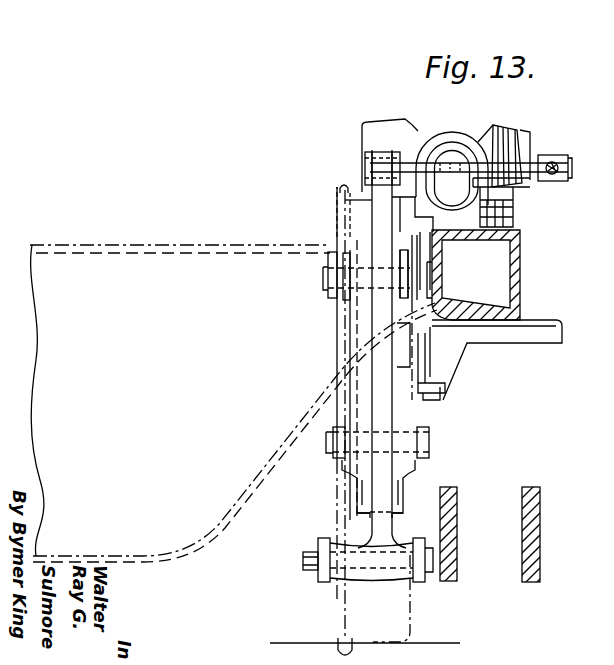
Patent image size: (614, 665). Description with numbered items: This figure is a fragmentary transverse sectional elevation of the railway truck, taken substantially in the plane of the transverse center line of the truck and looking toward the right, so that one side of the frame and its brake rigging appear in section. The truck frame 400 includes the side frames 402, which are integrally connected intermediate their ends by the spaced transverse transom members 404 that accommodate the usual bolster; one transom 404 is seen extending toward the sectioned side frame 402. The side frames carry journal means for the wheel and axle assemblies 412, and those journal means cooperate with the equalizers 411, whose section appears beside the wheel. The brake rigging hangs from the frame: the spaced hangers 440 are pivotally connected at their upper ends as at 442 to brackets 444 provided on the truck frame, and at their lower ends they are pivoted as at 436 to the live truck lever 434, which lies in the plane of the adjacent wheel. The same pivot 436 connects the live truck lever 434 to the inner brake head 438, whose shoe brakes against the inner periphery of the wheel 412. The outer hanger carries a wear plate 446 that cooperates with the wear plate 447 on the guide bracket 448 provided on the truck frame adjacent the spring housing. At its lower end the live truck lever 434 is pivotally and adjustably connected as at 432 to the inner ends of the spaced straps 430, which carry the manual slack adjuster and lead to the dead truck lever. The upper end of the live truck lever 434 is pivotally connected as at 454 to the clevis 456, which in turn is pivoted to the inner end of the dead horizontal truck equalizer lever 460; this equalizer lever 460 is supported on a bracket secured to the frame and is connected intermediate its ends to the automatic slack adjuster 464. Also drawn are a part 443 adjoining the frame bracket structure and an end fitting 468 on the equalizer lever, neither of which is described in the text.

The truck frame 400 is at (527, 241).
The side frames 402 is at (522, 270).
The transverse transom members 404 is at (150, 235).
The equalizers 411 is at (521, 534).
The wheel and axle assemblies 412 is at (392, 637).
The spaced straps 430 is at (421, 583).
The pivotal and adjustable connection 432 is at (315, 572).
The live truck lever 434 is at (377, 218).
The pivot 436 is at (333, 447).
The inner brake head 438 is at (407, 477).
The spaced hangers 440 is at (350, 340).
The pivot 442 is at (325, 280).
The bracket extension 443 is at (607, 370).
The brackets 444 is at (327, 257).
The wear plate 446 is at (417, 410).
The wear plate 447 is at (443, 393).
The guide bracket 448 is at (427, 377).
The pivot 454 is at (365, 167).
The clevis 456 is at (372, 150).
The dead horizontal truck equalizer lever 460 is at (507, 167).
The automatic slack adjuster 464 is at (473, 128).
The nut 468 is at (563, 162).